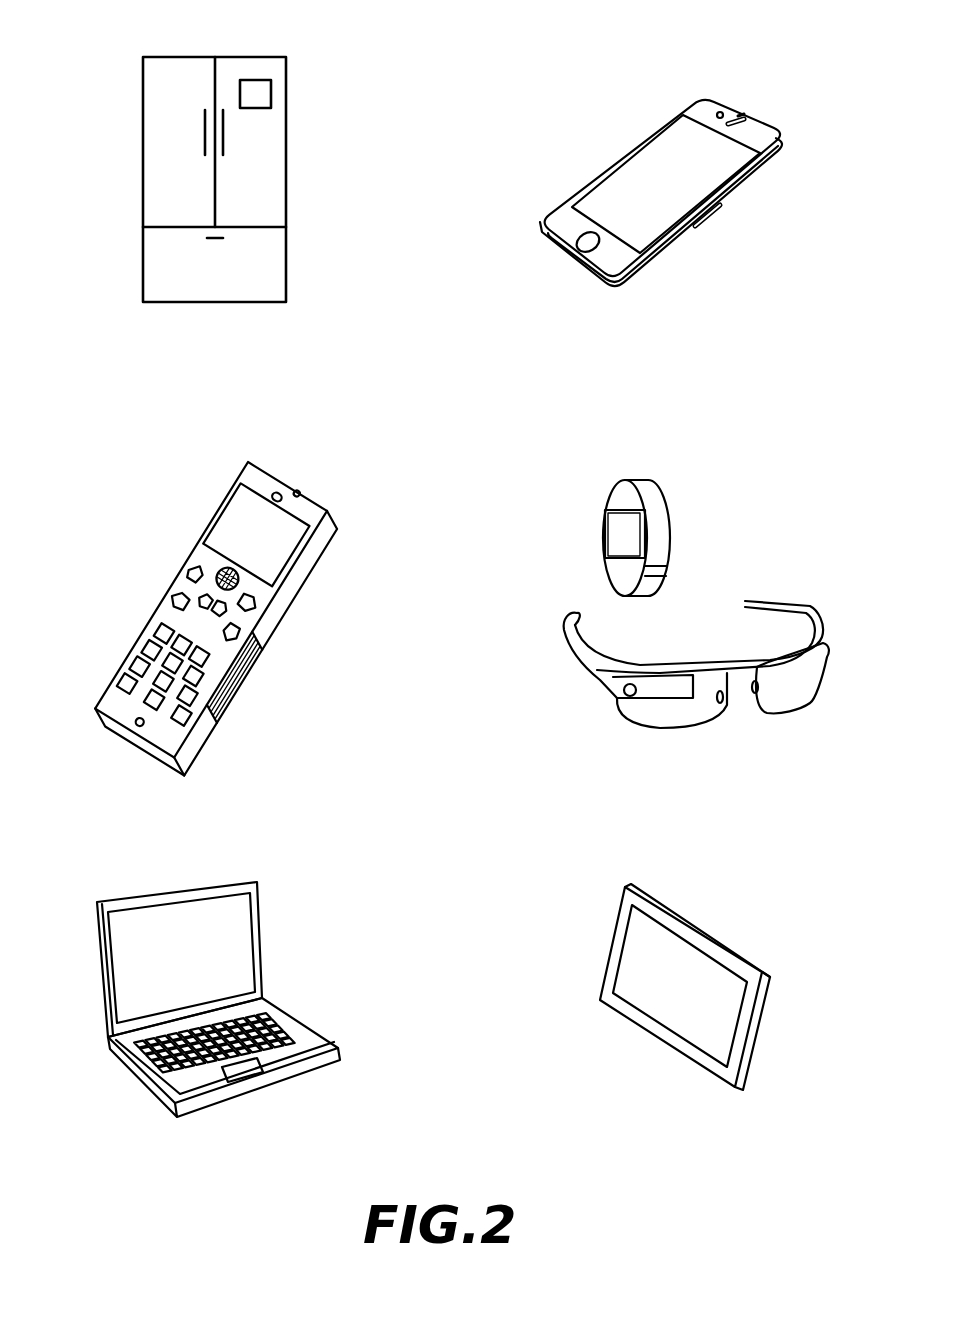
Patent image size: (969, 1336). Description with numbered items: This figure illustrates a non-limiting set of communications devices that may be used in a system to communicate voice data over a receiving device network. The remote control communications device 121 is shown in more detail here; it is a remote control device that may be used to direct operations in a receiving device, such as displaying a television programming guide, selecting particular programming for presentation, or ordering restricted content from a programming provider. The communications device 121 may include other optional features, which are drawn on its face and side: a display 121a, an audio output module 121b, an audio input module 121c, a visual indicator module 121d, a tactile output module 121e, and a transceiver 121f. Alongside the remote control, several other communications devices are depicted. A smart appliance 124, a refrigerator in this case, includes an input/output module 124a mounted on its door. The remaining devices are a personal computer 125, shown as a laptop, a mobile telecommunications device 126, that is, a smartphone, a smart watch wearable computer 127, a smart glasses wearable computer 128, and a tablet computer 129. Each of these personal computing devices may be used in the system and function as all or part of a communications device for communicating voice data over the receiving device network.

The remote control communications device 121 is at (250, 475).
The display 121a is at (242, 518).
The audio output module 121b is at (218, 576).
The audio input module 121c is at (135, 726).
The visual indicator module 121d is at (278, 492).
The tactile output module 121e is at (252, 678).
The transceiver 121f is at (302, 489).
The smart appliance 124 is at (254, 58).
The input/output module 124a is at (263, 95).
The personal computer 125 is at (318, 1040).
The mobile telecommunications device 126 is at (630, 170).
The smart watch wearable computer 127 is at (610, 528).
The smart glasses wearable computer 128 is at (592, 685).
The tablet computer 129 is at (725, 958).